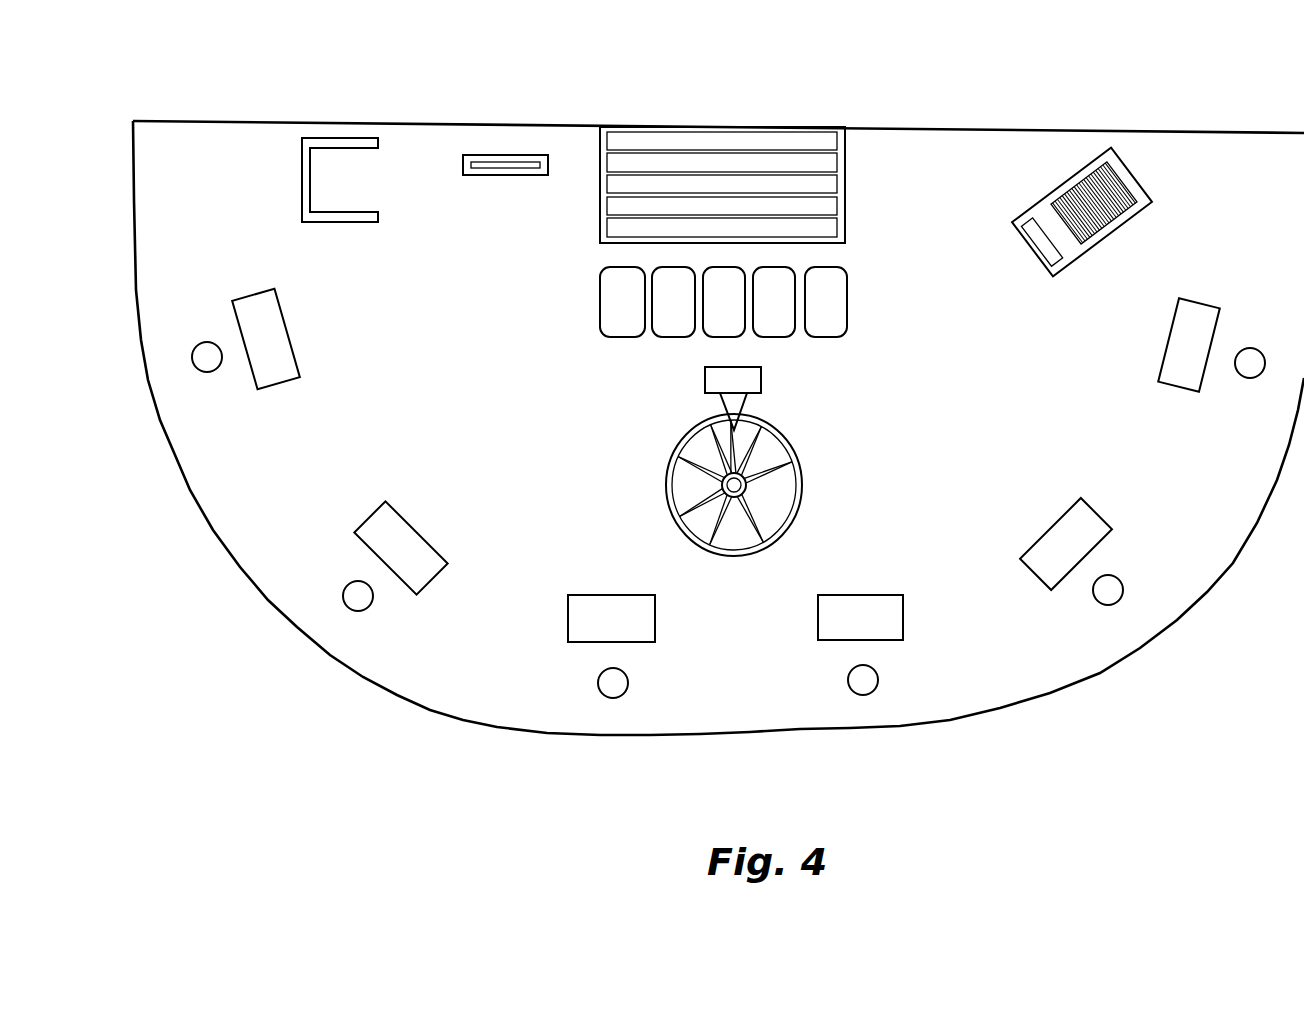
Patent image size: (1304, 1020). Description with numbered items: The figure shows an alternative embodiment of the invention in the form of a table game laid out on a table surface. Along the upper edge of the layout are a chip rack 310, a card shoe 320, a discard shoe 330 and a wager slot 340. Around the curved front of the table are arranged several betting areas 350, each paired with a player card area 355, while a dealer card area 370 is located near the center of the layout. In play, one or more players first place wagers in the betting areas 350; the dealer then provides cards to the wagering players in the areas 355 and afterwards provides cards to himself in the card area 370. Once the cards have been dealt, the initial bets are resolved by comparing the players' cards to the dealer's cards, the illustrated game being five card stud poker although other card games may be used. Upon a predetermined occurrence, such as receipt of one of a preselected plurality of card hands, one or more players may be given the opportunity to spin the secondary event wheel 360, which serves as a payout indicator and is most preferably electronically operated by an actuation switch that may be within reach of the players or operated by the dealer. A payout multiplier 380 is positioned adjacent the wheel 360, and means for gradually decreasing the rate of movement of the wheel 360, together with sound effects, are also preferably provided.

The chip rack 310 is at (775, 140).
The card shoe 320 is at (1140, 177).
The discard shoe 330 is at (332, 148).
The wager slot 340 is at (510, 167).
The betting areas 350 is at (192, 358).
The player card areas 355 is at (292, 337).
The secondary event wheel 360 is at (802, 472).
The card area 370 is at (882, 290).
The payout multiplier 380 is at (762, 380).